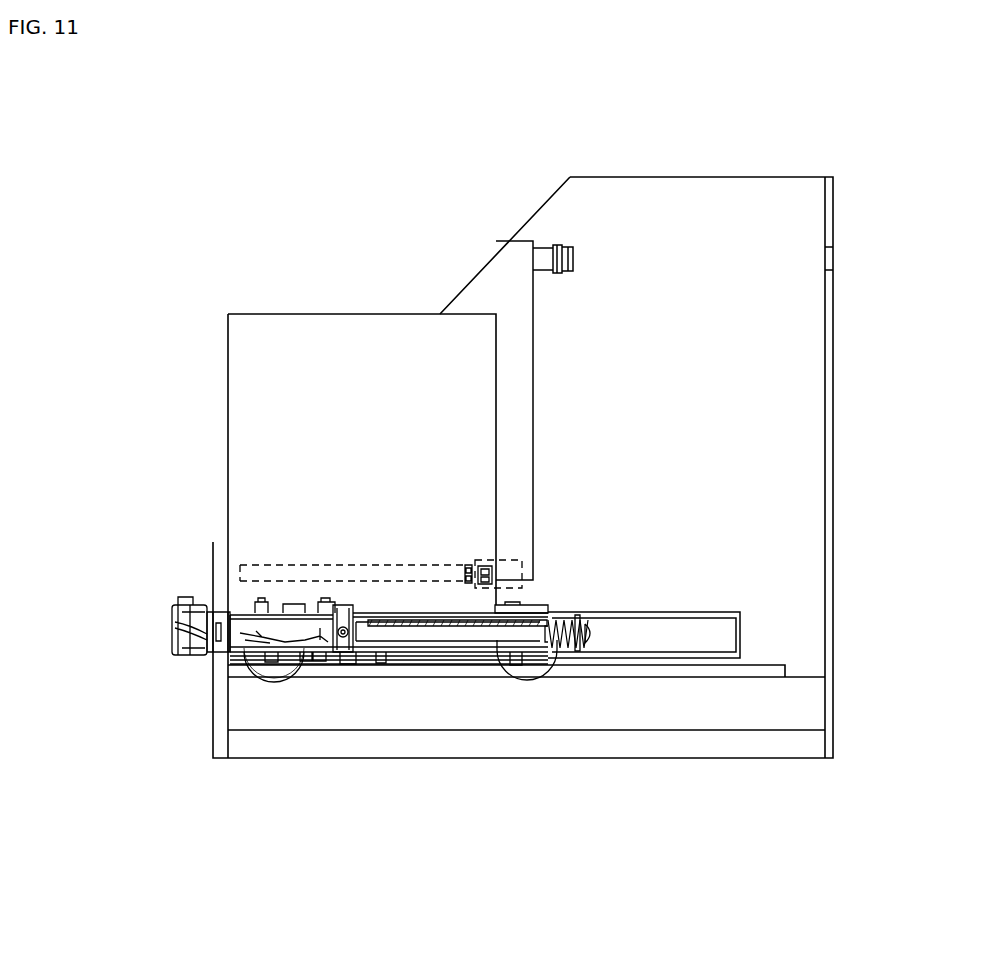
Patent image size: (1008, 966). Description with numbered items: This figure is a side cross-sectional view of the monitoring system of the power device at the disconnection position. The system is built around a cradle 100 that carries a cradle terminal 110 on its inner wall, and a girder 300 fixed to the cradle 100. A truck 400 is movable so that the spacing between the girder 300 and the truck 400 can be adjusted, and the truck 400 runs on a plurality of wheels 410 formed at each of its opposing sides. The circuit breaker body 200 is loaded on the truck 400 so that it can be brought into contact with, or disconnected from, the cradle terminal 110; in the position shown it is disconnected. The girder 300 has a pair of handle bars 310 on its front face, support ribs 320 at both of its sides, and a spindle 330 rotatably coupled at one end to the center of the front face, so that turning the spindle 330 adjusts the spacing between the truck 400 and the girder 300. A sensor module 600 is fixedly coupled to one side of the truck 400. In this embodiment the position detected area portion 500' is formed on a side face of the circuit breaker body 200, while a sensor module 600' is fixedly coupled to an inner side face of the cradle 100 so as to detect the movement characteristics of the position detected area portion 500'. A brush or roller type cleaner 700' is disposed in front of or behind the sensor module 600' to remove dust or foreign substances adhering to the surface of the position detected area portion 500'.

The cradle 100 is at (812, 167).
The cradle terminal 110 is at (833, 259).
The circuit breaker body 200 is at (270, 313).
The girder 300 is at (180, 703).
The handle bars 310 is at (183, 657).
The support ribs 320 is at (219, 657).
The spindle 330 is at (566, 655).
The truck 400 is at (470, 656).
The wheels 410 is at (531, 664).
The position detected area portion 500' is at (310, 497).
The sensor module 600 is at (389, 704).
The sensor module 600' is at (461, 413).
The cleaner 700' is at (406, 410).